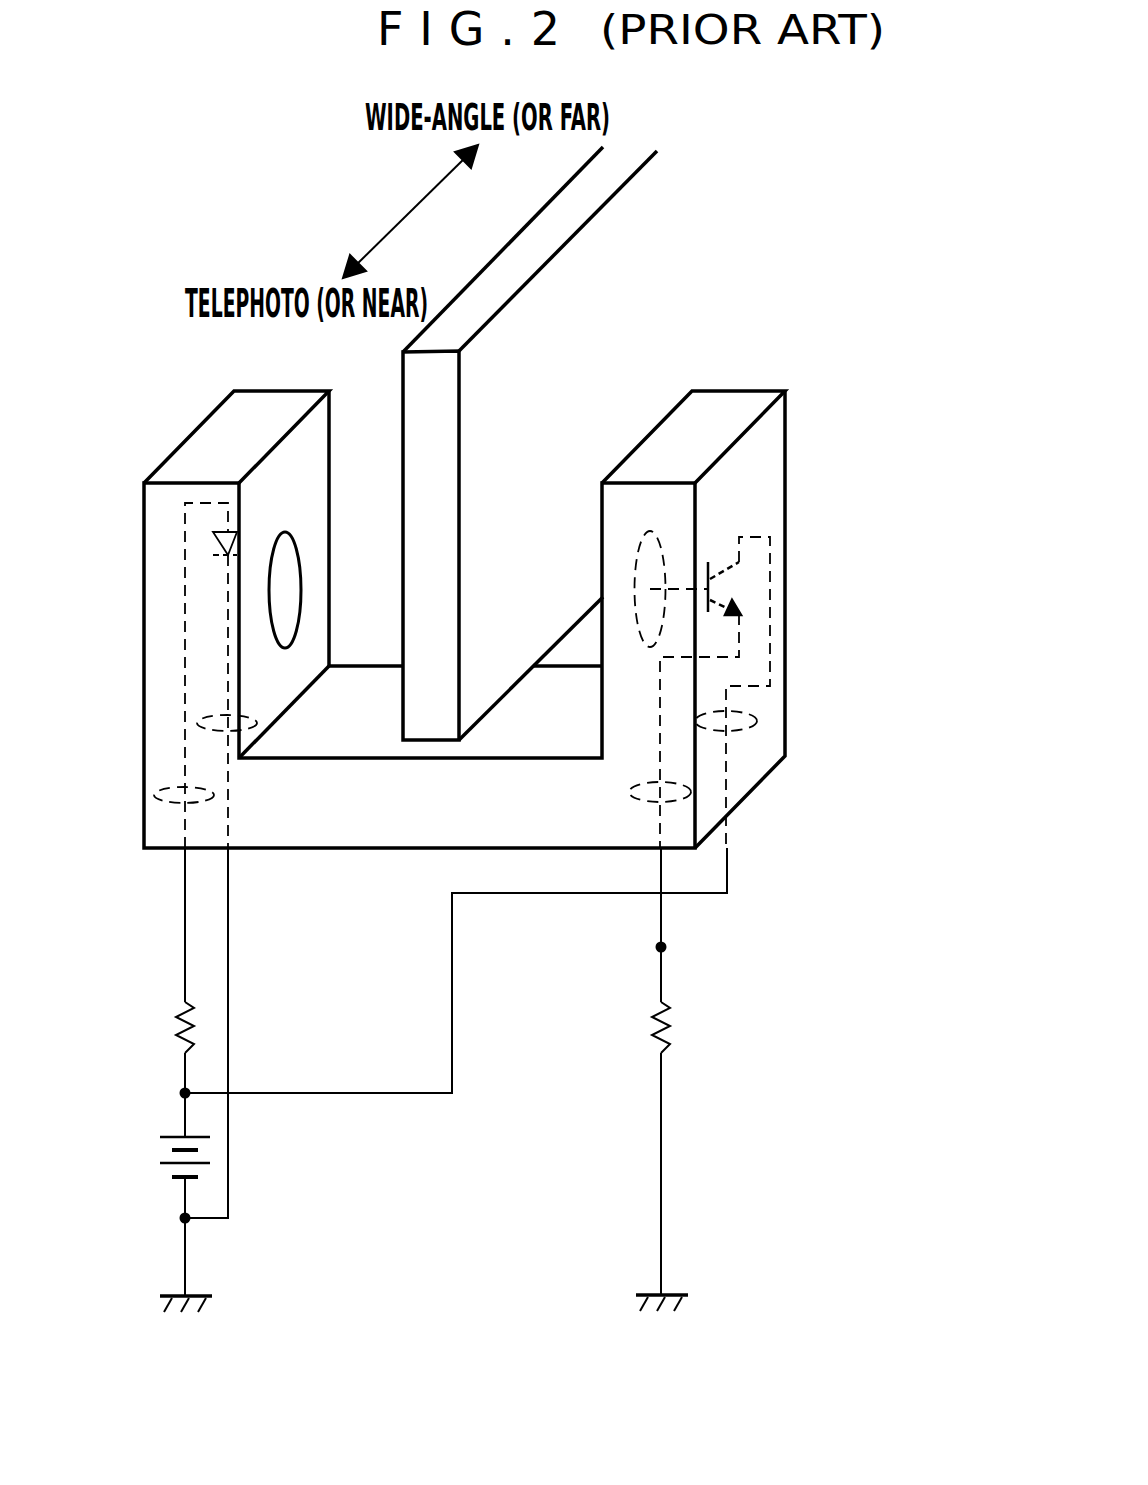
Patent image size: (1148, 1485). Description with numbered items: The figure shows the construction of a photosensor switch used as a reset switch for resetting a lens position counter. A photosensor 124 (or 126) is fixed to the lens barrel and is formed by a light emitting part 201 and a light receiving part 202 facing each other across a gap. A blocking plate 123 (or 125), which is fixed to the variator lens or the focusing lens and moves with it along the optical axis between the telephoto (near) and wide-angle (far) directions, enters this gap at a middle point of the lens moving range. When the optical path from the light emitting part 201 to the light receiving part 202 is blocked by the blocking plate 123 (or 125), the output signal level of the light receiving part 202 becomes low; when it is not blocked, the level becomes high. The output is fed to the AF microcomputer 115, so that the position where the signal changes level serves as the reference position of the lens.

The switch (blocking plate) 123 is at (590, 443).
The switch (blocking plate) 125 is at (567, 347).
The photosensor 124 is at (464, 659).
The photosensor 126 is at (340, 825).
The light emitting part 201 is at (315, 480).
The light receiving part 202 is at (749, 573).
The AF microcomputer 115 is at (661, 947).